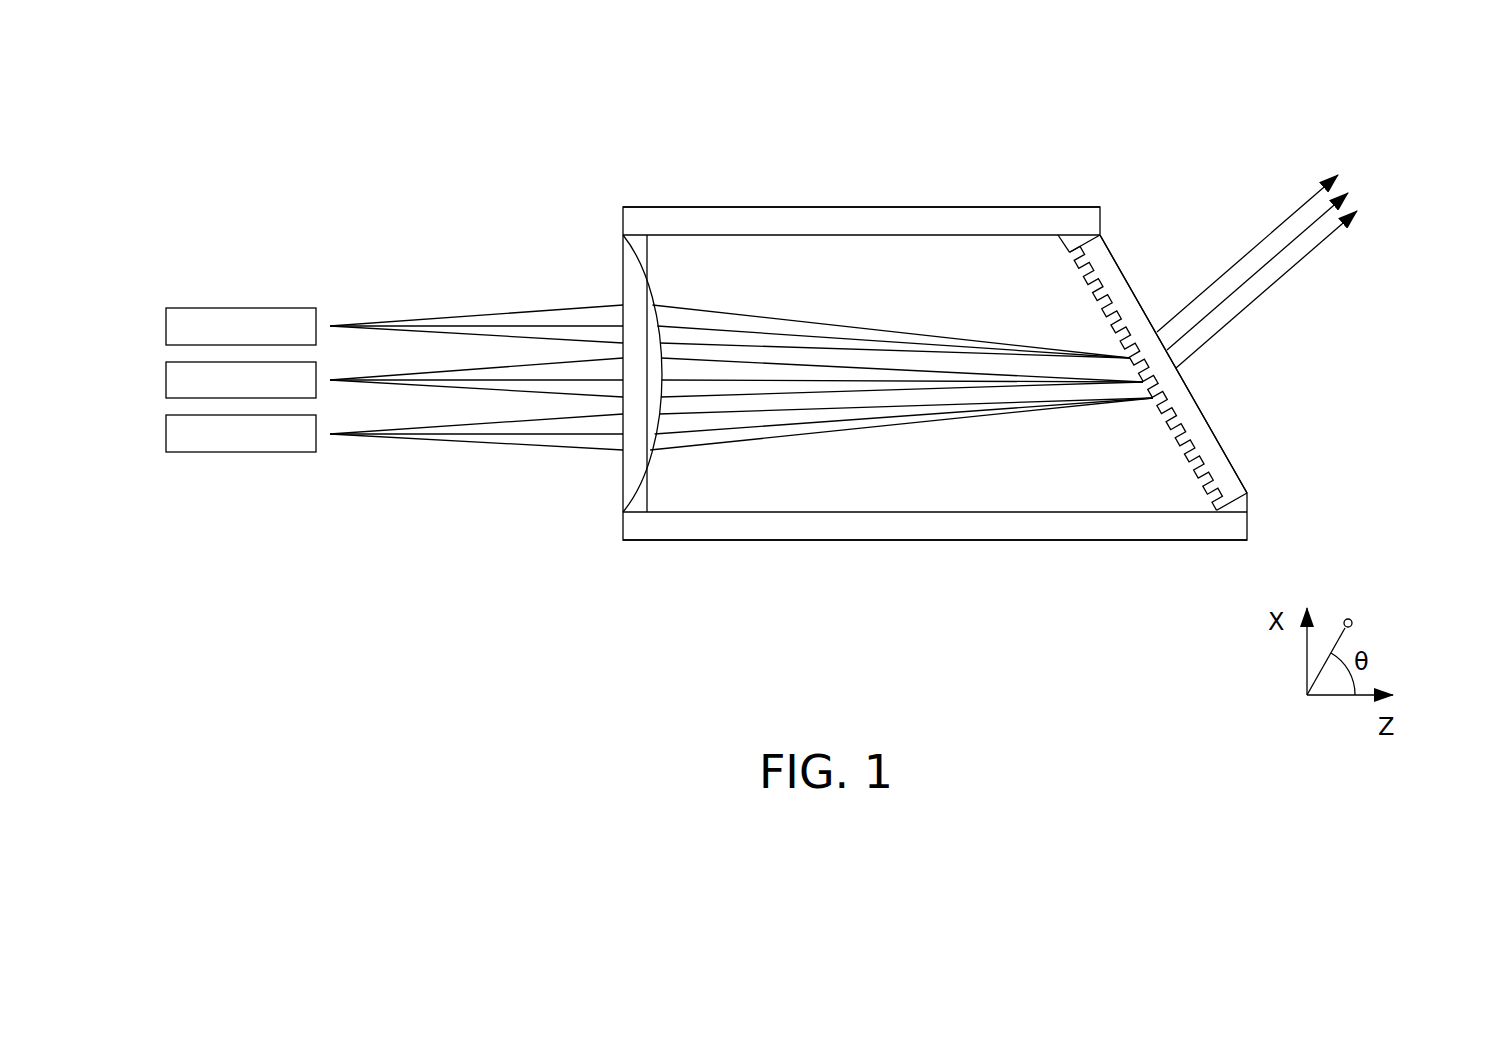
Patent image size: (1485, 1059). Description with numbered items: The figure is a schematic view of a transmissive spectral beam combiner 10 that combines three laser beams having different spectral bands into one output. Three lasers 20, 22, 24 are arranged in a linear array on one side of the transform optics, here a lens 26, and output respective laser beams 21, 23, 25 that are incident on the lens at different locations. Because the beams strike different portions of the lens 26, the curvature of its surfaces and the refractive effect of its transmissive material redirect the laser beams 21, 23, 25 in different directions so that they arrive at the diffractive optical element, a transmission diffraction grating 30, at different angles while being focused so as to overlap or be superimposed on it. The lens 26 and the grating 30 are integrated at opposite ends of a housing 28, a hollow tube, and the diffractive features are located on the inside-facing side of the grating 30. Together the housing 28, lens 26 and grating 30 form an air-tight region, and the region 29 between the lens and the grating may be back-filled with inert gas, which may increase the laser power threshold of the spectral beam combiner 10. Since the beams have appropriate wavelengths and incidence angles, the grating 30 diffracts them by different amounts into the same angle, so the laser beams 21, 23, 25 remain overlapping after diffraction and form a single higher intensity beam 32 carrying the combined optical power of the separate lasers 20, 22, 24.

The spectral beam combiner 10 is at (670, 175).
The laser 20 is at (166, 324).
The laser 22 is at (166, 378).
The laser 24 is at (166, 431).
The laser beam 21 is at (703, 362).
The laser beam 23 is at (472, 388).
The laser beam 25 is at (398, 436).
The transform optics 26 is at (625, 483).
The housing 28 is at (752, 213).
The region 29 is at (952, 482).
The diffractive optical element 30 is at (1207, 433).
The single higher intensity beam 32 is at (1327, 263).